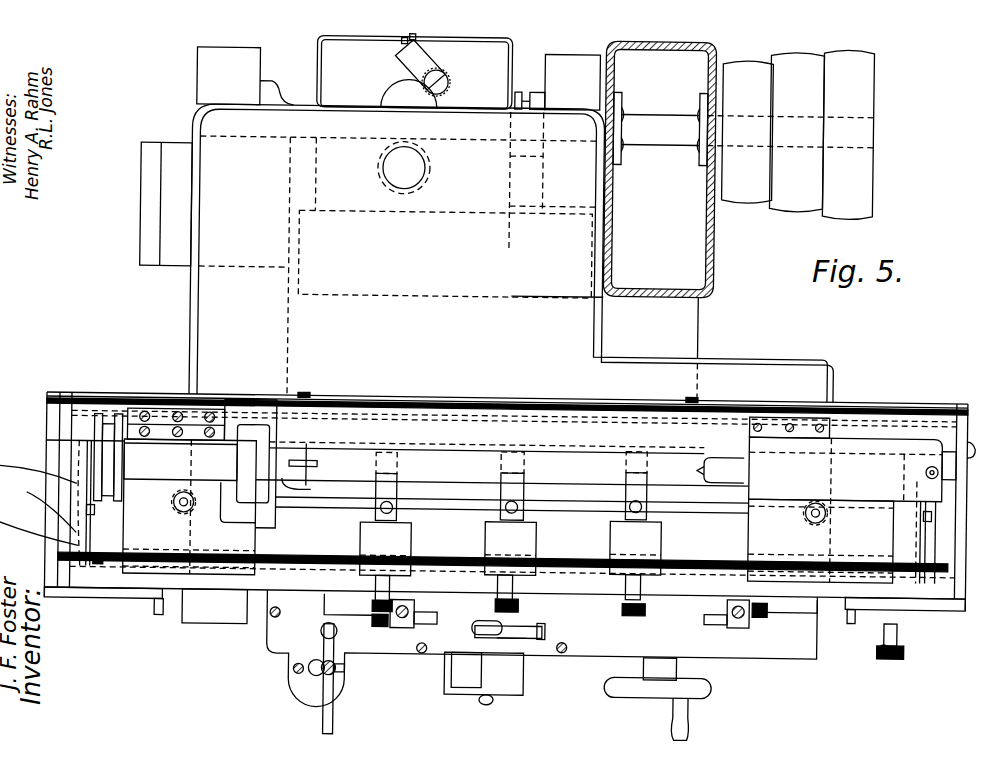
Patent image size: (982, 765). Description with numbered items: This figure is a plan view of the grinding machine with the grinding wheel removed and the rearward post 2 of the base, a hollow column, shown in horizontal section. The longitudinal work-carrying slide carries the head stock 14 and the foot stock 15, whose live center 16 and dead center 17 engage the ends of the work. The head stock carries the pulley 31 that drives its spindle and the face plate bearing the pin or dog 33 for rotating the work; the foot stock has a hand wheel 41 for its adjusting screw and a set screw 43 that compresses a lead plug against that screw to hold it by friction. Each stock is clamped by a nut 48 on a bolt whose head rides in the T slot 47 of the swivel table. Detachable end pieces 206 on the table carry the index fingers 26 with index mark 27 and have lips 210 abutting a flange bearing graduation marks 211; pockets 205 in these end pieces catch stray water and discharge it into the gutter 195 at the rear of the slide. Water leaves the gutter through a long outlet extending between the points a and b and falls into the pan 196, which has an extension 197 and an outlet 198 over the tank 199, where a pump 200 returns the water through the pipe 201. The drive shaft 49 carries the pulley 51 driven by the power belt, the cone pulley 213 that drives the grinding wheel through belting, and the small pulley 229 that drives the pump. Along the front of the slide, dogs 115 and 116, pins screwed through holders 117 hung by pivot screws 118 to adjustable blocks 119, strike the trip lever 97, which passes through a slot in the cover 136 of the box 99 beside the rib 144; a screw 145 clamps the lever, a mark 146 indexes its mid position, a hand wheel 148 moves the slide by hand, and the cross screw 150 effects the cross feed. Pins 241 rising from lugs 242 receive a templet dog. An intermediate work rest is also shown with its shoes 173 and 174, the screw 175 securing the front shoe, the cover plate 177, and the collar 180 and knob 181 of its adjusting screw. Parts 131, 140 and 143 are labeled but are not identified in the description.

The rearwardly extending part of the base 2 is at (713, 268).
The head stock 14 is at (510, 512).
The foot stock 15 is at (845, 510).
The live center 16 is at (306, 488).
The dead center 17 is at (706, 458).
The projection 26 is at (125, 497).
The index mark 27 is at (88, 508).
The pulley 31 is at (107, 413).
The pin or dog 33 is at (318, 461).
The hand wheel 41 is at (950, 504).
The set screw 43 is at (931, 454).
The T slot 47 is at (603, 512).
The nut 48 is at (182, 490).
The drive shaft 49 is at (663, 130).
The pulley 51 is at (568, 64).
The lever 97 is at (548, 620).
The box 99 is at (318, 698).
The dog 115 is at (436, 619).
The dog 116 is at (716, 617).
The holder 117 is at (400, 623).
The pivot screw 118 is at (417, 604).
The block 119 is at (327, 603).
The housing 131 is at (310, 672).
The box cover 136 is at (577, 652).
The lever 140 is at (338, 717).
The pivot 143 is at (350, 668).
The rib 144 is at (548, 633).
The clamp screw 145 is at (484, 673).
The mark 146 is at (481, 609).
The hand wheel 148 is at (615, 692).
The cross screw 150 is at (492, 715).
The shoe 173 is at (377, 482).
The shoe 174 is at (399, 460).
The screw 175 is at (392, 500).
The cover plate 177 is at (678, 536).
The collar 180 is at (392, 585).
The knob 181 is at (376, 618).
The gutter 195 is at (509, 467).
The pan 196 is at (197, 329).
The extension 197 is at (812, 362).
The outlet 198 is at (404, 167).
The tank 199 is at (488, 48).
The pump 200 is at (384, 102).
The pipe 201 is at (433, 63).
The pockets 205 is at (90, 566).
The end pieces 206 is at (920, 520).
The lips 210 is at (88, 528).
The graduation marks 211 is at (945, 560).
The cone pulley 213 is at (797, 134).
The small pulley 229 is at (541, 95).
The pins 241 is at (157, 610).
The lugs 242 is at (162, 614).
The point a is at (306, 390).
The point b is at (690, 390).